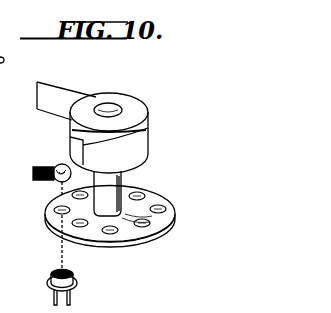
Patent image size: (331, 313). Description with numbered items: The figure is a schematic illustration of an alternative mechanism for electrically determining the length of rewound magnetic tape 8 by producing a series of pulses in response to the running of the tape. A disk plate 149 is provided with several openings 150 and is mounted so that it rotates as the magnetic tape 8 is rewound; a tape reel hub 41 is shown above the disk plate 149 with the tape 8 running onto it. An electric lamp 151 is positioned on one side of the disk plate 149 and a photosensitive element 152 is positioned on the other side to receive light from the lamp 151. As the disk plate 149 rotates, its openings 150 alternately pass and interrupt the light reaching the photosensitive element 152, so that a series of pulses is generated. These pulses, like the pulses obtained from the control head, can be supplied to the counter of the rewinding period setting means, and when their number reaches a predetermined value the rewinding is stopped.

The magnetic tape 8 is at (58, 91).
The cylindrical body 41 is at (135, 103).
The disk plate 149 is at (132, 233).
The openings 150 is at (140, 192).
The electric lamp 151 is at (60, 165).
The photosensitive element 152 is at (72, 270).